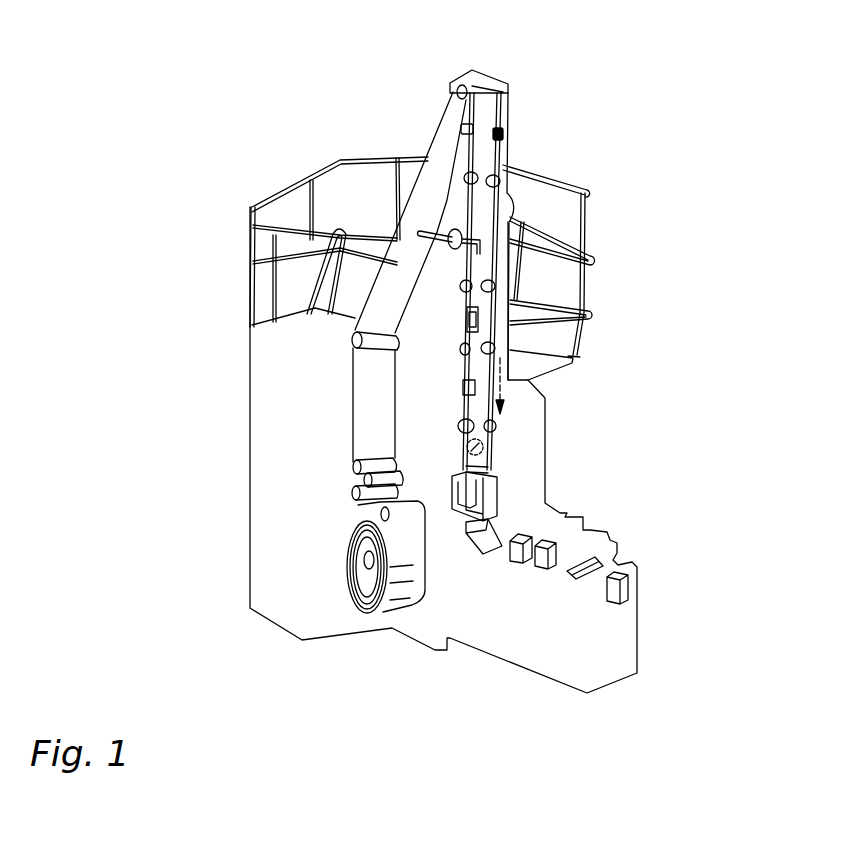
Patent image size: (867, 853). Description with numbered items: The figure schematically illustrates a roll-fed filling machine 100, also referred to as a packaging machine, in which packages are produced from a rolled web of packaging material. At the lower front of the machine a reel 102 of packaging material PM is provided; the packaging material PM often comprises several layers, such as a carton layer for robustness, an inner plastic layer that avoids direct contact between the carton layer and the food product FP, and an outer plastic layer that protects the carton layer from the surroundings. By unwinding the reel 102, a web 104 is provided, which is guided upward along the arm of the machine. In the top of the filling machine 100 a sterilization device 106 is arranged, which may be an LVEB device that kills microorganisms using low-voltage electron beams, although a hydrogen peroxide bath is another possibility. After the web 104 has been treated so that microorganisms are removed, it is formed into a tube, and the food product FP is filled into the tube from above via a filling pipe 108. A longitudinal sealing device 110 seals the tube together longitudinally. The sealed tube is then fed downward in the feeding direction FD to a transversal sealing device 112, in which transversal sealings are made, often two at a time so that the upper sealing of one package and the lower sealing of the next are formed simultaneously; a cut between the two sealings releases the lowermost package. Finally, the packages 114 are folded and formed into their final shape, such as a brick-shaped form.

The filling machine 100 is at (624, 118).
The reel 102 is at (363, 573).
The web 104 is at (372, 416).
The sterilization device 106 is at (452, 88).
The filling pipe 108 is at (402, 230).
The longitudinal sealing device 110 is at (500, 293).
The transversal sealing device 112 is at (492, 493).
The packages 114 is at (540, 560).
The packaging material PM is at (368, 446).
The feeding direction FD is at (518, 388).
The food product FP is at (482, 447).